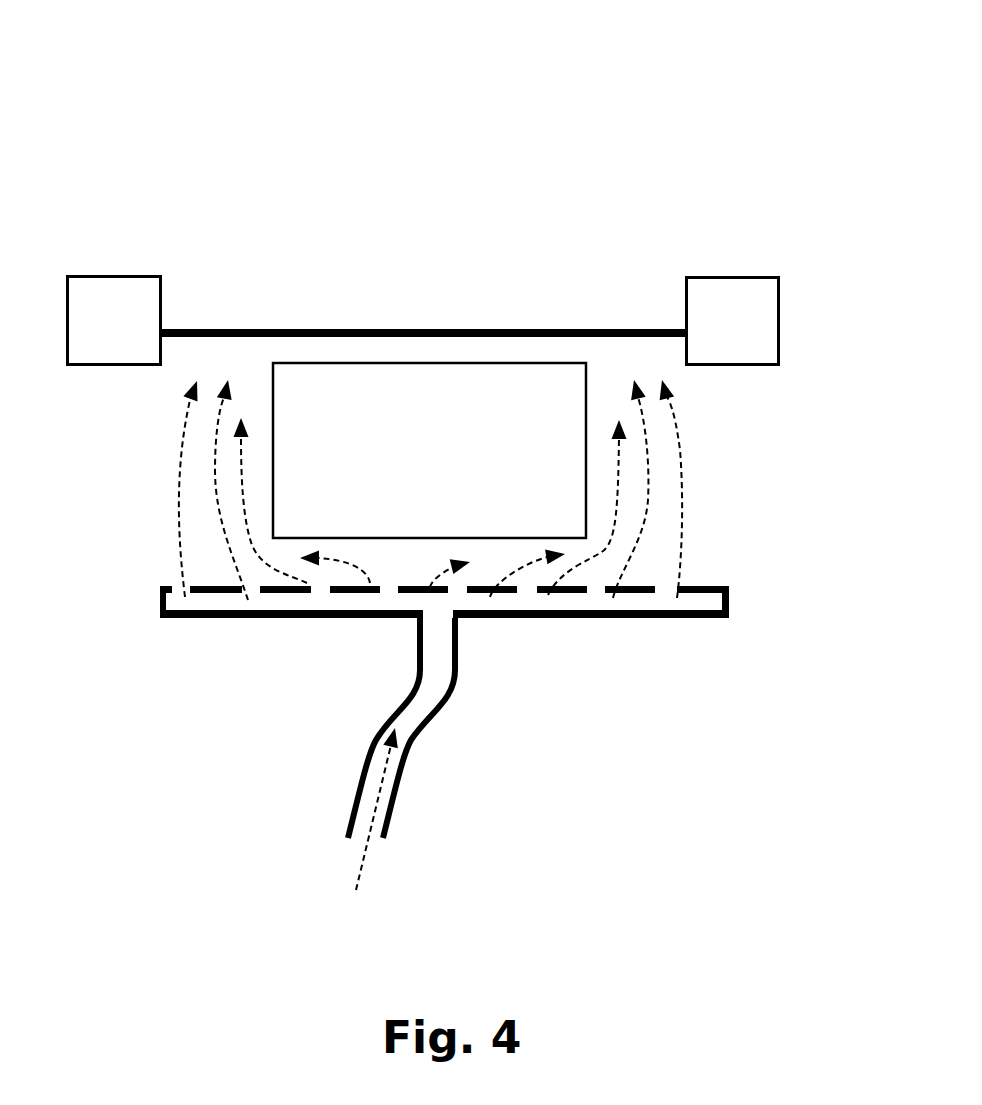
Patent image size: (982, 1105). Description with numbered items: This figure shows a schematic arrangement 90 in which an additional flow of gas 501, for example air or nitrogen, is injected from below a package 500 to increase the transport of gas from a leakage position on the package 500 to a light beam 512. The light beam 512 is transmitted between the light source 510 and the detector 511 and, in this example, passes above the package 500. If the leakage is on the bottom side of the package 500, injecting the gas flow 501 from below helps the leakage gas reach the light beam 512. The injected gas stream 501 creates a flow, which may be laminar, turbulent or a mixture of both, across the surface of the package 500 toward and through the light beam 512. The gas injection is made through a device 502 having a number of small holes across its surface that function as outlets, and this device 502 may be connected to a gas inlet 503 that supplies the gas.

The arrangement 90 is at (240, 88).
The light source 510 is at (114, 262).
The detector 511 is at (752, 258).
The light beam 512 is at (352, 319).
The package 500 is at (451, 350).
The flow of gas 501 is at (709, 487).
The device 502 is at (557, 630).
The gas inlet 503 is at (380, 870).